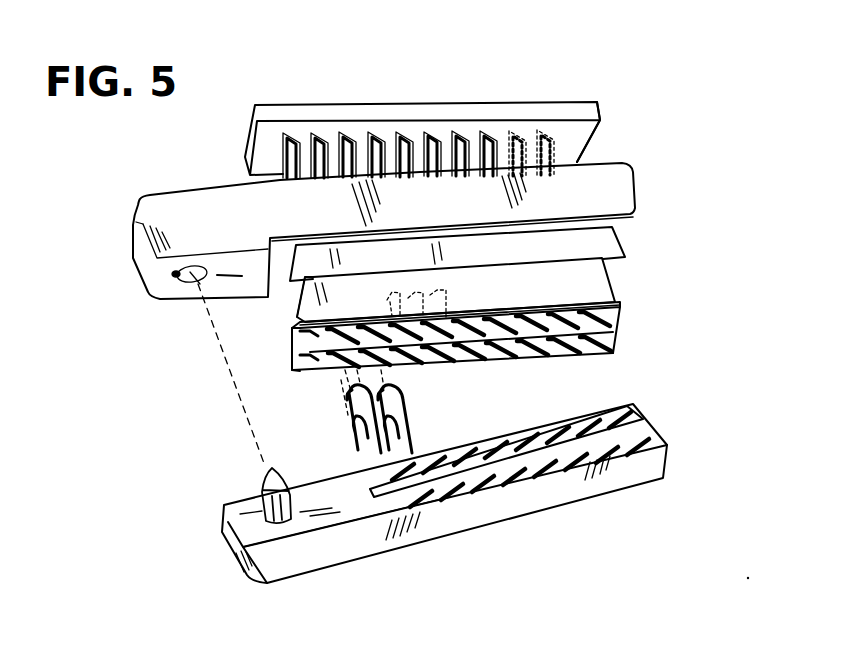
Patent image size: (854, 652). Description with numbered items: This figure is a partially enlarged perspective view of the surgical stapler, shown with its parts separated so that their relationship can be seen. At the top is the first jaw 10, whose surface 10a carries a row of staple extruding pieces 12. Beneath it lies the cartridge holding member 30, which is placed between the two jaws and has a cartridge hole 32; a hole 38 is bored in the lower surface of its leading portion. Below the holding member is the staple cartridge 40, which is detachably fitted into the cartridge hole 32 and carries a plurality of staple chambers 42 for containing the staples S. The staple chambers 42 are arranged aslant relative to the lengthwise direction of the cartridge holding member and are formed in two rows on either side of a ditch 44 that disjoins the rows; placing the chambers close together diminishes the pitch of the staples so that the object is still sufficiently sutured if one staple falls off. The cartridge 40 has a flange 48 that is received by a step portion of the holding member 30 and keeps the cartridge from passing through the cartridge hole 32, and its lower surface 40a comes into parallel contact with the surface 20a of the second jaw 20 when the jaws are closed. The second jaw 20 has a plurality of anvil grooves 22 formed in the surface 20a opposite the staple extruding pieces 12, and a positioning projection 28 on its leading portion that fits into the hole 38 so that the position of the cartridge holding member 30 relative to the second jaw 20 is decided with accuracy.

The first jaw 10 is at (543, 99).
The surface of first jaw 10a is at (578, 138).
The staple extruding pieces 12 is at (357, 145).
The cartridge holding member 30 is at (640, 186).
The cartridge hole 32 is at (587, 244).
The hole 38 is at (155, 267).
The staple cartridge 40 is at (483, 338).
The lower surface of staple cartridge 40a is at (603, 354).
The staple chambers 42 is at (457, 365).
The ditch 44 is at (615, 342).
The flange 48 is at (299, 354).
The staples S is at (348, 431).
The second jaw 20 is at (447, 511).
The surface of second jaw 20a is at (348, 508).
The anvil grooves 22 is at (640, 413).
The positioning projection 28 is at (261, 481).